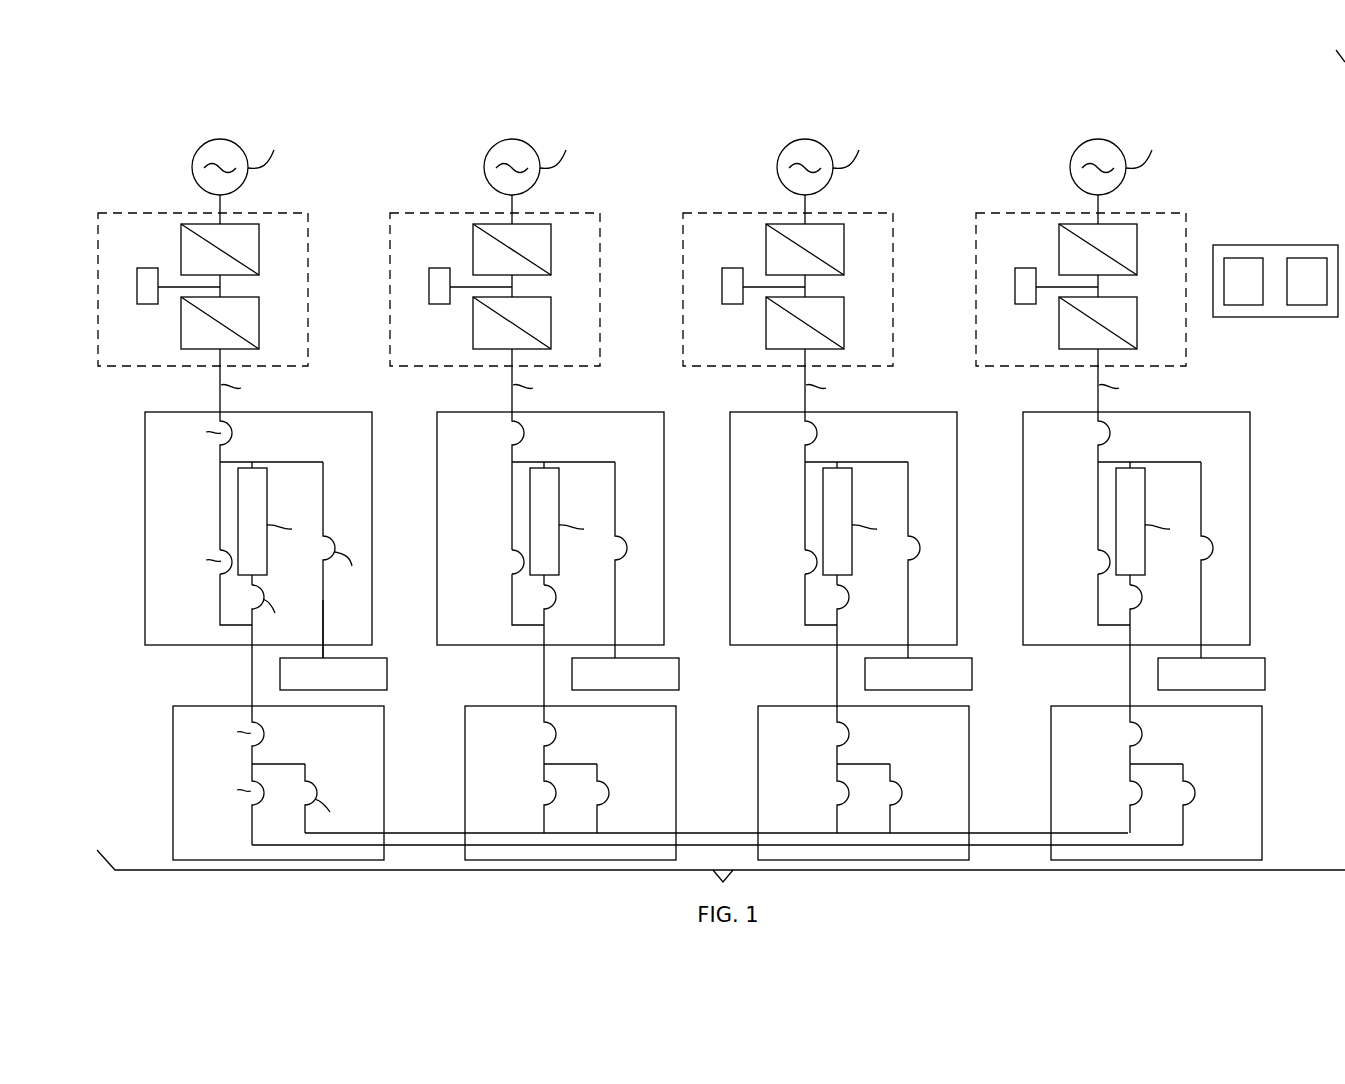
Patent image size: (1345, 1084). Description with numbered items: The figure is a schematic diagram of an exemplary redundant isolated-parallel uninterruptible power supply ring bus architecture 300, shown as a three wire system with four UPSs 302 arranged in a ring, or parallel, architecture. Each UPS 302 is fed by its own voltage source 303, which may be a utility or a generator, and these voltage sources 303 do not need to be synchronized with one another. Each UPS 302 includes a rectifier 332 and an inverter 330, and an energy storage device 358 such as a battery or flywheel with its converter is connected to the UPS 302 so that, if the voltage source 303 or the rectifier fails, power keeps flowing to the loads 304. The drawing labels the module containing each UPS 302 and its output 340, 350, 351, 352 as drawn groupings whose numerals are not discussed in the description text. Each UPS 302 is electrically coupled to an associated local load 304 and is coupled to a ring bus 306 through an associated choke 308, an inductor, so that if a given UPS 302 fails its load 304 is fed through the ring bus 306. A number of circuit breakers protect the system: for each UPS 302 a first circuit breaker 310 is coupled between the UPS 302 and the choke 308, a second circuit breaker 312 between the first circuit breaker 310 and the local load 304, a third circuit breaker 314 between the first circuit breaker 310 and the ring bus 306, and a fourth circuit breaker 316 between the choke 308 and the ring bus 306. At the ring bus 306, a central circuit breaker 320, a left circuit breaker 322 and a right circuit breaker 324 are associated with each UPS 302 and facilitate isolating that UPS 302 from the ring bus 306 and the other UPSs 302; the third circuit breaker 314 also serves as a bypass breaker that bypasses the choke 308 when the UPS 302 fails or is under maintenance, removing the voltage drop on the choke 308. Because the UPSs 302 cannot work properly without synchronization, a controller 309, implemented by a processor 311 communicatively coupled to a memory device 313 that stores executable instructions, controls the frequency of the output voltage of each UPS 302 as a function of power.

The ring bus architecture 300 is at (1197, 104).
The uninterruptible power supply 302 is at (152, 210).
The voltage source 303 is at (221, 138).
The load 304 is at (387, 673).
The ring bus 306 is at (422, 845).
The choke 308 is at (267, 506).
The controller 309 is at (1275, 278).
The first circuit breaker 310 is at (219, 446).
The processor 311 is at (1243, 305).
The second circuit breaker 312 is at (336, 544).
The memory device 313 is at (1307, 305).
The third circuit breaker 314 is at (219, 577).
The fourth circuit breaker 316 is at (264, 591).
The central circuit breaker 320 is at (250, 742).
The left circuit breaker 322 is at (250, 798).
The right circuit breaker 324 is at (318, 789).
The inverter 330 is at (181, 342).
The rectifier 332 is at (259, 243).
The UPS output 340 is at (220, 390).
The UPS module 350 is at (308, 212).
The load bus 351 is at (380, 658).
The UPS module 352 is at (820, 268).
The energy storage device 358 is at (137, 290).